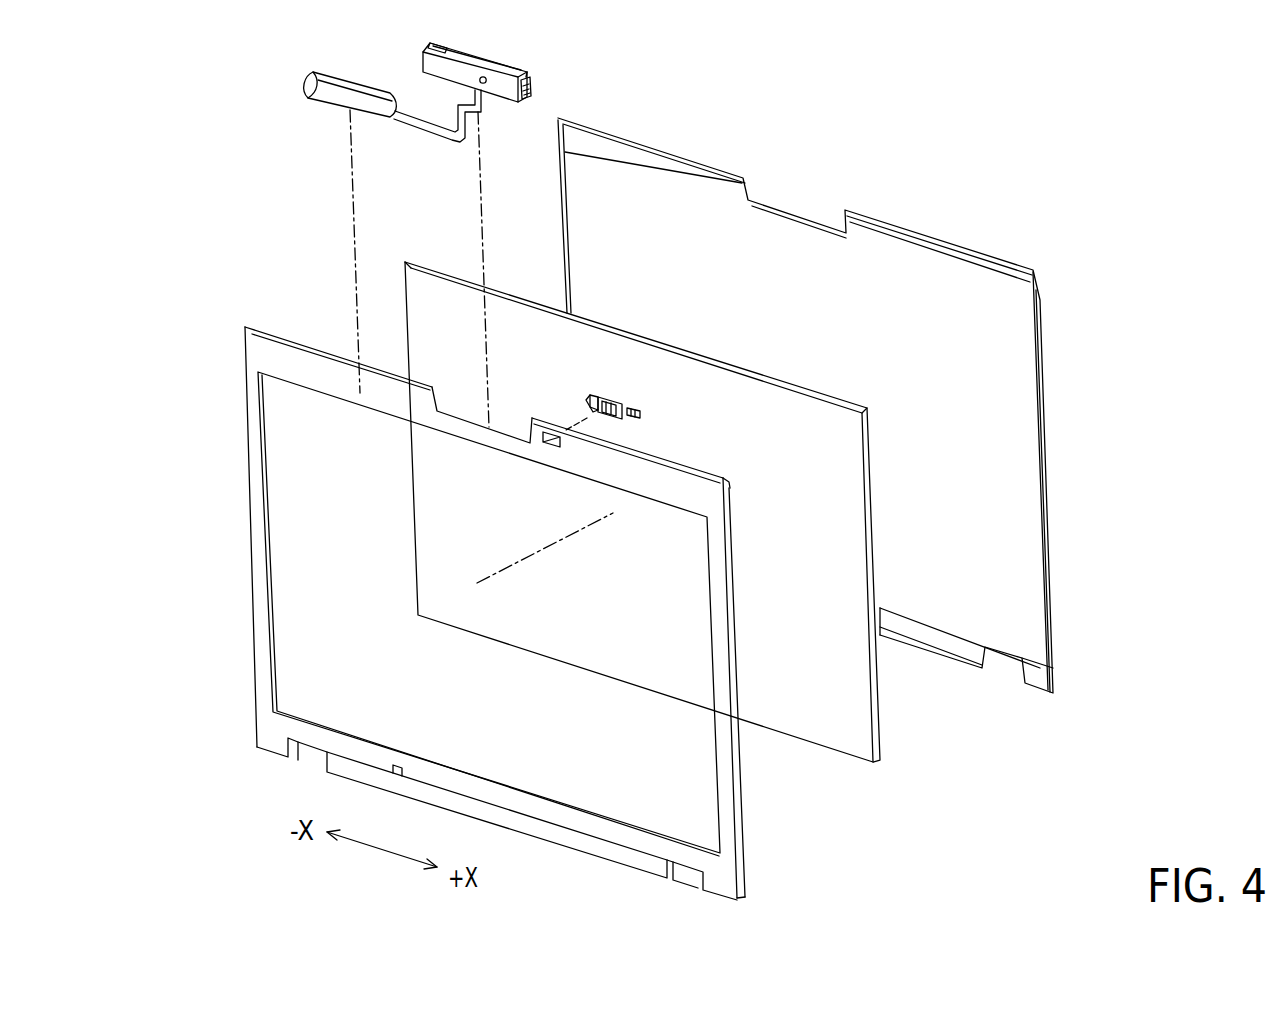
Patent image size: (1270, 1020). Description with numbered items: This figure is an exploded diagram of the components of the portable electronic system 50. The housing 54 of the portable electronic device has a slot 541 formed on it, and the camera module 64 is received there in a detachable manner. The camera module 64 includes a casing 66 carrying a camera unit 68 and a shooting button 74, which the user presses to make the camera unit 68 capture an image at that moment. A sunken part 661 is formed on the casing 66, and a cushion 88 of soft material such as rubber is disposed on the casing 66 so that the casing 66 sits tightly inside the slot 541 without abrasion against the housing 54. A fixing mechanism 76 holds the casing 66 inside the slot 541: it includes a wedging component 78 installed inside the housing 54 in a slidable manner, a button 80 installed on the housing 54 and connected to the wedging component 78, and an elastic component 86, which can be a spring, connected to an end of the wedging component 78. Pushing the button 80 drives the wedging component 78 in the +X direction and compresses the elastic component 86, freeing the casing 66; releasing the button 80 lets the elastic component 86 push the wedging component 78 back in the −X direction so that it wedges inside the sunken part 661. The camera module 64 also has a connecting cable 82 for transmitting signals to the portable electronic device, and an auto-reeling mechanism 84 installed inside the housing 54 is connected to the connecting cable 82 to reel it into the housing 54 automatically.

The portable electronic system 50 is at (995, 152).
The housing 54 is at (240, 358).
The slot 541 is at (459, 388).
The camera module 64 is at (418, 47).
The casing 66 is at (489, 62).
The sunken part 661 is at (531, 95).
The camera unit 68 is at (486, 84).
The shooting button 74 is at (442, 50).
The fixing mechanism 76 is at (603, 388).
The wedging component 78 is at (590, 398).
The button 80 is at (612, 405).
The connecting cable 82 is at (438, 136).
The auto-reeling mechanism 84 is at (333, 97).
The elastic component 86 is at (637, 412).
The cushion 88 is at (537, 78).